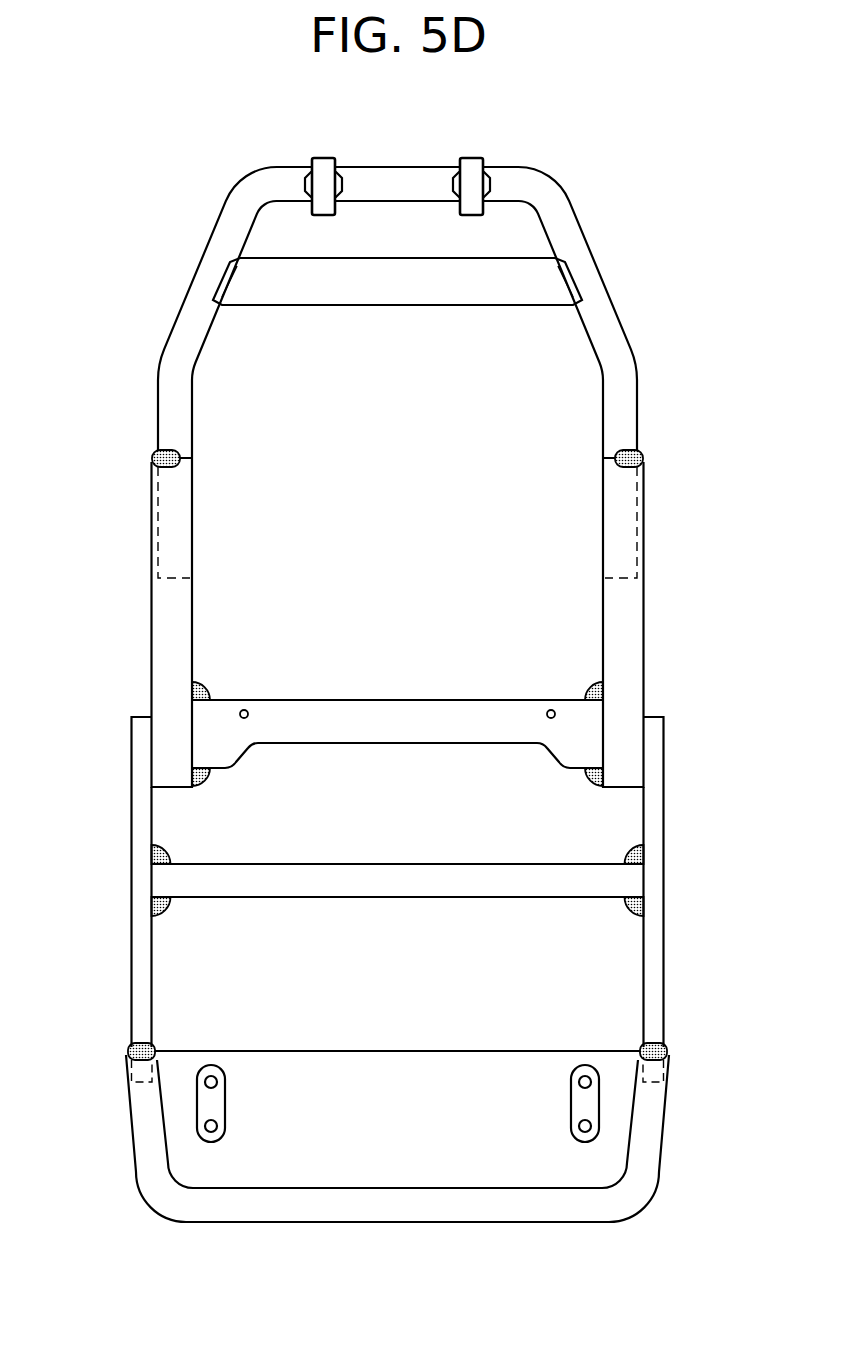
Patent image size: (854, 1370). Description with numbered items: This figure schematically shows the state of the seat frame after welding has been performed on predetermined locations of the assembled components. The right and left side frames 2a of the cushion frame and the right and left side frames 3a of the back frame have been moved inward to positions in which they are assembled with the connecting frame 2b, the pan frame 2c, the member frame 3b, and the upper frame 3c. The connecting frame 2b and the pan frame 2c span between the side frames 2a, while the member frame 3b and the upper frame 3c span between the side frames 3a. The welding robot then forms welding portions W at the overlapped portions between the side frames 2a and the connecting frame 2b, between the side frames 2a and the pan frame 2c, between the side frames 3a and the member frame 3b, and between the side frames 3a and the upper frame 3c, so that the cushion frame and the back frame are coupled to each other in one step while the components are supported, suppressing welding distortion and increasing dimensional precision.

The upper frame 3c is at (608, 333).
The side frame 3a is at (630, 625).
The member frame 3b is at (392, 718).
The side frame 2a is at (655, 818).
The connecting frame 2b is at (465, 878).
The pan frame 2c is at (300, 1068).
The welding portion W is at (150, 453).